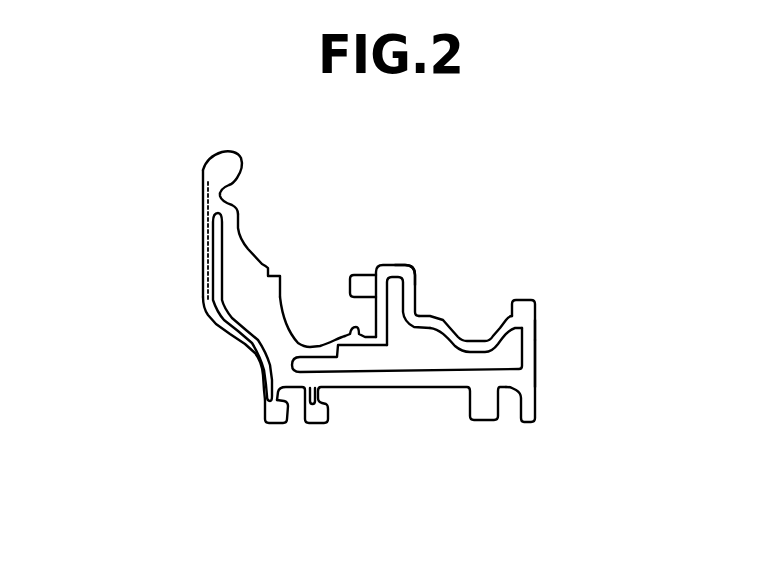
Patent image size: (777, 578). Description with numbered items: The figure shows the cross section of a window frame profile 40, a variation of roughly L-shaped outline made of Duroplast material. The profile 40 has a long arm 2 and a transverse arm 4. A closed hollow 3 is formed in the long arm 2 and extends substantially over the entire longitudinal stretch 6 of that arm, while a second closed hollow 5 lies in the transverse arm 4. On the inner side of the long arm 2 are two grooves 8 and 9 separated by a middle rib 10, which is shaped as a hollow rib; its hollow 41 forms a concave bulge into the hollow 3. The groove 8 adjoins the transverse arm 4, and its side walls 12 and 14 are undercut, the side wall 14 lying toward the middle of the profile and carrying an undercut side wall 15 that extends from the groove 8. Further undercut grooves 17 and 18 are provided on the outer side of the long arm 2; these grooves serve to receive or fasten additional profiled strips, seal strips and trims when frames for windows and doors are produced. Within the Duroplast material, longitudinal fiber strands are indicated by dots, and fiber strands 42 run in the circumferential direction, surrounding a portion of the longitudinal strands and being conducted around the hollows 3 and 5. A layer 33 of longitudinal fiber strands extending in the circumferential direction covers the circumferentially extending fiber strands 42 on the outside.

The long arm 2 is at (535, 327).
The closed hollow 3 is at (362, 358).
The transverse arm 4 is at (222, 162).
The closed hollow 5 is at (237, 302).
The longitudinal stretch 6 is at (392, 496).
The groove 8 is at (280, 326).
The groove 9 is at (445, 318).
The middle rib 10 is at (388, 267).
The side wall 12 is at (267, 243).
The side wall 14 is at (343, 236).
The undercut side wall 15 is at (363, 315).
The groove 17 is at (270, 398).
The groove 18 is at (510, 397).
The layer of longitudinal fiber strands 33 is at (206, 270).
The profile 40 is at (127, 362).
The hollow 41 is at (410, 270).
The fiber strands 42 is at (204, 235).